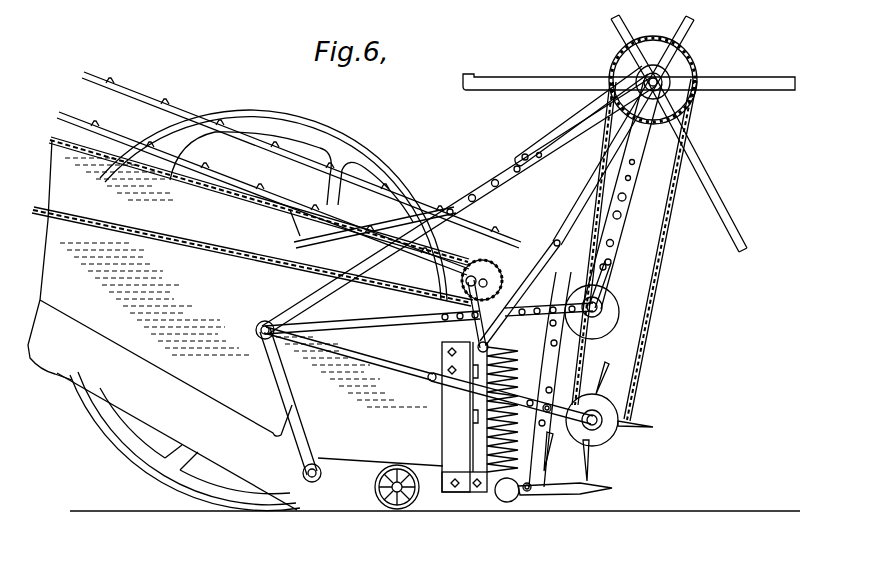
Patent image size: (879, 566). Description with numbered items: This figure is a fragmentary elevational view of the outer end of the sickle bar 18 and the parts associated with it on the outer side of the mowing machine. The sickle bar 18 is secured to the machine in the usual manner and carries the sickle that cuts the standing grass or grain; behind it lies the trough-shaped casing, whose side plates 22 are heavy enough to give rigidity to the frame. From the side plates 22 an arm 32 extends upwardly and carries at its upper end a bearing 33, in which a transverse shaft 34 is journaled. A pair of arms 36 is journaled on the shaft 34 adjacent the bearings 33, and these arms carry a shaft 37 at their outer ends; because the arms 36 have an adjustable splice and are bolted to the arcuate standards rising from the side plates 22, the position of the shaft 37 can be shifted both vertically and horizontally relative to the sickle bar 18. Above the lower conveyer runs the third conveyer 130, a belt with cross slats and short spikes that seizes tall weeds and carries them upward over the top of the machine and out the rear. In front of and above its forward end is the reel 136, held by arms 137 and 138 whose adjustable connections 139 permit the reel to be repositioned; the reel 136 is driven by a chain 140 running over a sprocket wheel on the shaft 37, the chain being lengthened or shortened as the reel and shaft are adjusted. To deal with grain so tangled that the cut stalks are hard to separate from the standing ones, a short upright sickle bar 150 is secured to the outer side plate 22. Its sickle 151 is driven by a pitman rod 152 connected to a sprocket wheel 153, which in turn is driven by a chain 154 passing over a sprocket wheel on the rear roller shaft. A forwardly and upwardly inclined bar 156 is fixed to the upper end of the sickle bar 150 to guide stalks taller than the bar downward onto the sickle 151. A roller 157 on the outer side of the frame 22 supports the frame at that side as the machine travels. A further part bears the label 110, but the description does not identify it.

The sickle bar 18 is at (553, 494).
The side plates 22 is at (352, 471).
The arm 32 is at (282, 369).
The bearing 33 is at (266, 322).
The shaft 34 is at (256, 331).
The arms 36 is at (372, 376).
The shaft 37 is at (603, 432).
The curved frame bar 110 is at (565, 360).
The third conveyer 130 is at (385, 195).
The reel 136 is at (715, 165).
The arm 137 is at (622, 240).
The arm 138 is at (500, 188).
The adjustable connections 139 is at (523, 152).
The chain 140 is at (677, 256).
The upright sickle bar 150 is at (445, 420).
The sickle 151 is at (441, 393).
The pitman rod 152 is at (442, 333).
The sprocket wheel 153 is at (488, 262).
The chain 154 is at (185, 237).
The inclined bar 156 is at (533, 285).
The roller 157 is at (385, 500).